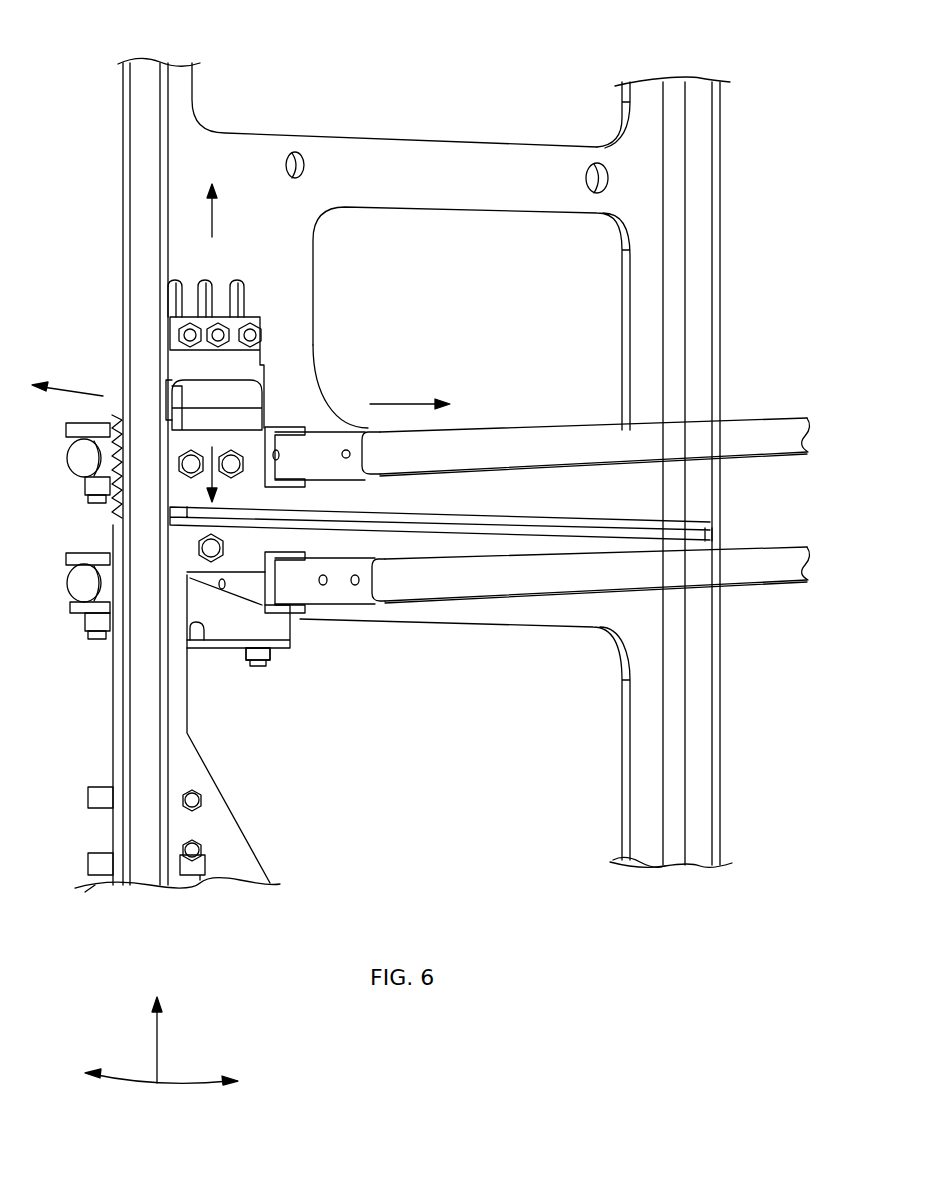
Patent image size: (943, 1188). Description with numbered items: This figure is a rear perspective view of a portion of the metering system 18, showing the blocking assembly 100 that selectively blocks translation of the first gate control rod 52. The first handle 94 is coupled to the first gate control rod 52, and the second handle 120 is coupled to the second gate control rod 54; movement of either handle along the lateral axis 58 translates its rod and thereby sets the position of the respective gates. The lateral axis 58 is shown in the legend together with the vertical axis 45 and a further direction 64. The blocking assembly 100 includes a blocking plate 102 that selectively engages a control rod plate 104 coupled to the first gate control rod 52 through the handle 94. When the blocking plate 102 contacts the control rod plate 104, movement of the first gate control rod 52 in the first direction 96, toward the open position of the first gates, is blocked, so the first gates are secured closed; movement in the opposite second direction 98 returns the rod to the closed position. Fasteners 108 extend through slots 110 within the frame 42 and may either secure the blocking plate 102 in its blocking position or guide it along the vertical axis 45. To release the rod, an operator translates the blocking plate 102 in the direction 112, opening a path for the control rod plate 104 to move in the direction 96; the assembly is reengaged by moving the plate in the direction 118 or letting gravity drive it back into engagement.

The metering system 18 is at (403, 475).
The frame 42 is at (190, 135).
The vertical axis 45 is at (157, 1044).
The first gate control rod 52 is at (528, 445).
The second gate control rod 54 is at (503, 570).
The lateral axis 58 is at (192, 1083).
The leftward direction 64 is at (127, 1080).
The first handle 94 is at (78, 452).
The first direction 96 is at (78, 386).
The second direction 98 is at (398, 404).
The blocking assembly 100 is at (217, 300).
The blocking plate 102 is at (237, 365).
The control rod plate 104 is at (245, 400).
The fasteners 108 is at (180, 332).
The slots 110 is at (237, 282).
The direction 112 is at (218, 220).
The direction 118 is at (167, 490).
The second handle 120 is at (78, 583).